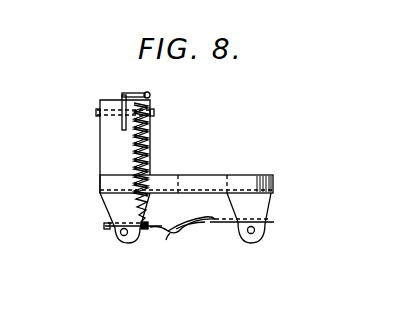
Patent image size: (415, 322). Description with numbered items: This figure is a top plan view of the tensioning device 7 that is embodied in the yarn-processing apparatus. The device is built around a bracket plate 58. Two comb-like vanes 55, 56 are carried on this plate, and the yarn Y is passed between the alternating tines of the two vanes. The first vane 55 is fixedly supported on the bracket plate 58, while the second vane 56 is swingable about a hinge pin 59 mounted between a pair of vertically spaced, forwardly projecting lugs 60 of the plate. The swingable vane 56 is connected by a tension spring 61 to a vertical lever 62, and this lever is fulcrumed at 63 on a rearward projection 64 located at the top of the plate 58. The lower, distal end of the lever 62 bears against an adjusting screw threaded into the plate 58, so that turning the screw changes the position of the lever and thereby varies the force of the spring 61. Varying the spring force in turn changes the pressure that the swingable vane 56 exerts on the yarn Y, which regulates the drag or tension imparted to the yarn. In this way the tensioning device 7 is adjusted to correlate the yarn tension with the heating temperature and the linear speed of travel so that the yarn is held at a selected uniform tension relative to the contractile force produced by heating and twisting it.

The tensioning device 7 is at (260, 172).
The comb-like vane 55 is at (228, 232).
The comb-like vane 56 is at (155, 232).
The bracket plate 58 is at (208, 178).
The hinge pin 59 is at (118, 238).
The forwardly-projecting lugs 60 is at (108, 200).
The tension spring 61 is at (146, 131).
The vertical lever 62 is at (126, 93).
The fulcrum 63 is at (97, 113).
The rearward projection 64 is at (105, 149).
The yarn Y is at (197, 232).